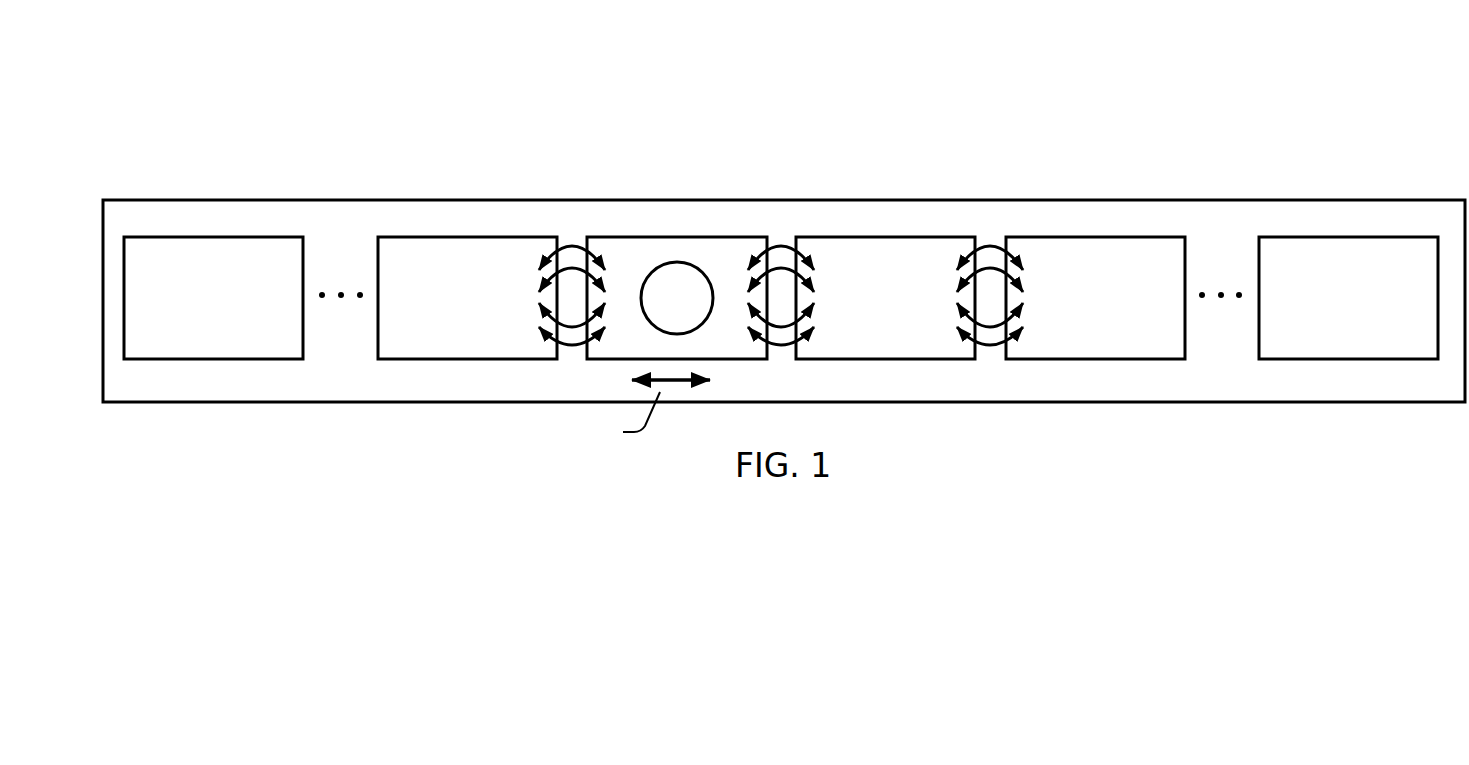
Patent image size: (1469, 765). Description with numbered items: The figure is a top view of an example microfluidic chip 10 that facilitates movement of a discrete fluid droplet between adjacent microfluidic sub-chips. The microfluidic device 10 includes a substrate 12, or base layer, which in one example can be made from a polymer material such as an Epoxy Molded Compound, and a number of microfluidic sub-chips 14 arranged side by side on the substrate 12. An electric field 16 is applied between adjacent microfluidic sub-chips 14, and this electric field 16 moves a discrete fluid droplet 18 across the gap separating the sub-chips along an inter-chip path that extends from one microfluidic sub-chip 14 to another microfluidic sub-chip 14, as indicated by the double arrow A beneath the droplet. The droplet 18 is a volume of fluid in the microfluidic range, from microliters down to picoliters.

The microfluidic chip 10 is at (186, 103).
The substrate 12 is at (244, 377).
The microfluidic sub-chip 14 is at (197, 237).
The electric field 16 is at (779, 245).
The discrete fluid droplet 18 is at (672, 263).